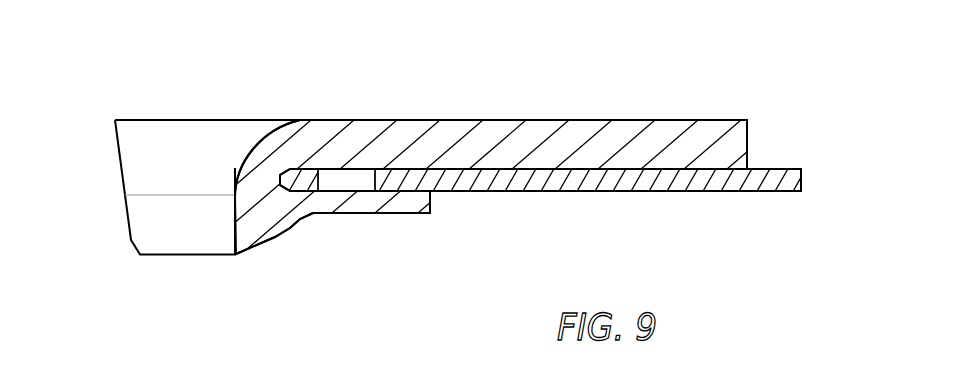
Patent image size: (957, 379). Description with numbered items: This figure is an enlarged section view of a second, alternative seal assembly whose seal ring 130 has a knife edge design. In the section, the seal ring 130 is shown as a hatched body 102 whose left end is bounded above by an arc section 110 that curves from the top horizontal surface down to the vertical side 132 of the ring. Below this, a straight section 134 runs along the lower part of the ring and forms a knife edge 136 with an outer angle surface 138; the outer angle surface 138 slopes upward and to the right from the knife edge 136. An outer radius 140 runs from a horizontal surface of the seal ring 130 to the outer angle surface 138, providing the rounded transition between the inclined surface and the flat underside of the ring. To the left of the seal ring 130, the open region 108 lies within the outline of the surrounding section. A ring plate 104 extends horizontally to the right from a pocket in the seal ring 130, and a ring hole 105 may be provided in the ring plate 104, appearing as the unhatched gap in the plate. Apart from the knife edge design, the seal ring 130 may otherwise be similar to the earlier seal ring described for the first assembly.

The body 102 is at (547, 132).
The ring plate 104 is at (775, 180).
The ring hole 105 is at (350, 180).
The cavity 108 is at (211, 148).
The arc section 110 is at (253, 142).
The seal ring 130 is at (618, 85).
The side wall 132 is at (232, 172).
The straight section 134 is at (235, 223).
The knife edge 136 is at (236, 257).
The outer angle surface 138 is at (257, 248).
The outer radius 140 is at (298, 223).